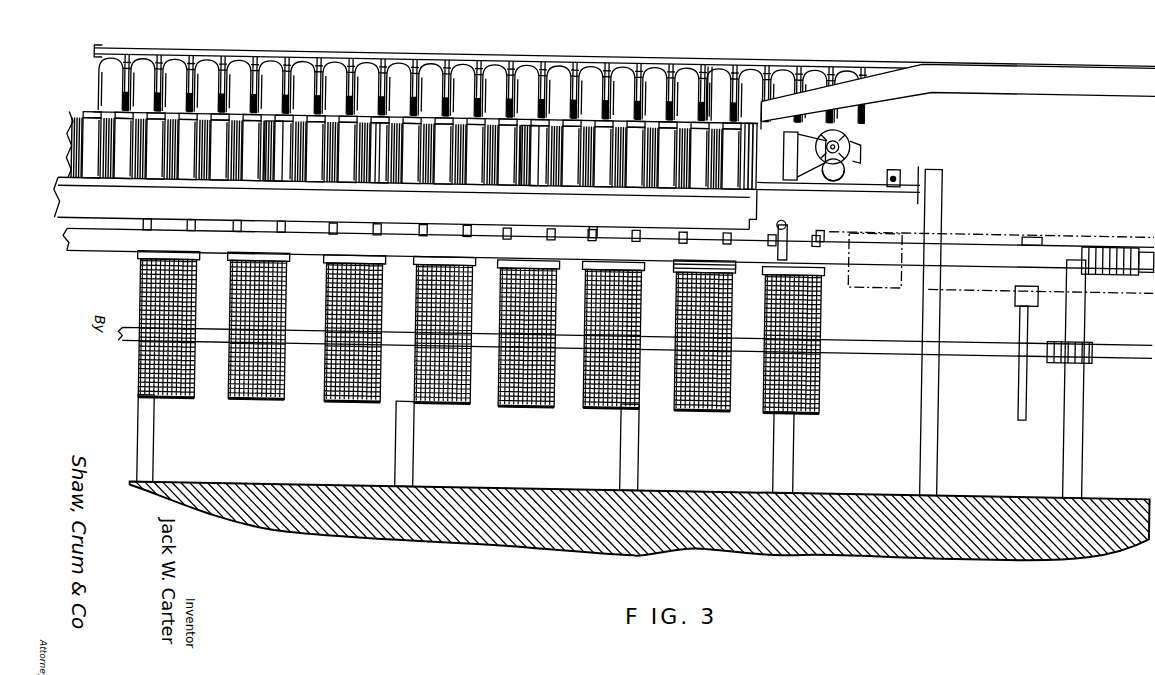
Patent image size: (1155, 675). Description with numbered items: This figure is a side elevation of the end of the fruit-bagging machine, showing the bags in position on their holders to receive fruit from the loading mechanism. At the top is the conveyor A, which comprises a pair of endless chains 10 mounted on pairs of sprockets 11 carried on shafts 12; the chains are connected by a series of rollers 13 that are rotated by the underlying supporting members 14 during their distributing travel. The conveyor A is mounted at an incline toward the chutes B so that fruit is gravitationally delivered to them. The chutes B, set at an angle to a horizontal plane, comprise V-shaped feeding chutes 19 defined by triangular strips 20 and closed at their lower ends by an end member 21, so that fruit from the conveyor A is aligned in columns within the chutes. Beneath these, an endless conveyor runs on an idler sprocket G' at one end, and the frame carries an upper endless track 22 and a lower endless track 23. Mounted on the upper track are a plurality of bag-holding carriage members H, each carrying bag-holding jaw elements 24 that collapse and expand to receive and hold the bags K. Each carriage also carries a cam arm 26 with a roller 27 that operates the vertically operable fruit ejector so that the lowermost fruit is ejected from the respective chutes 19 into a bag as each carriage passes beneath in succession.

The endless chains 10 is at (470, 49).
The rollers 13 is at (218, 55).
The conveyor A is at (321, 52).
The supporting members 14 is at (706, 64).
The chutes B is at (624, 178).
The V-shaped feeding chutes 19 is at (276, 175).
The triangular strips 20 is at (385, 175).
The end member 21 is at (682, 170).
The shafts 12 is at (860, 124).
The sprockets 11 is at (850, 149).
The roller 27 is at (792, 216).
The cam arm 26 is at (778, 217).
The idler sprocket G' is at (991, 255).
The upper endless track 22 is at (1098, 233).
The lower endless track 23 is at (1095, 336).
The bags K is at (327, 396).
The bag-holding carriage members H is at (588, 268).
The bag-holding jaw elements 24 is at (767, 256).